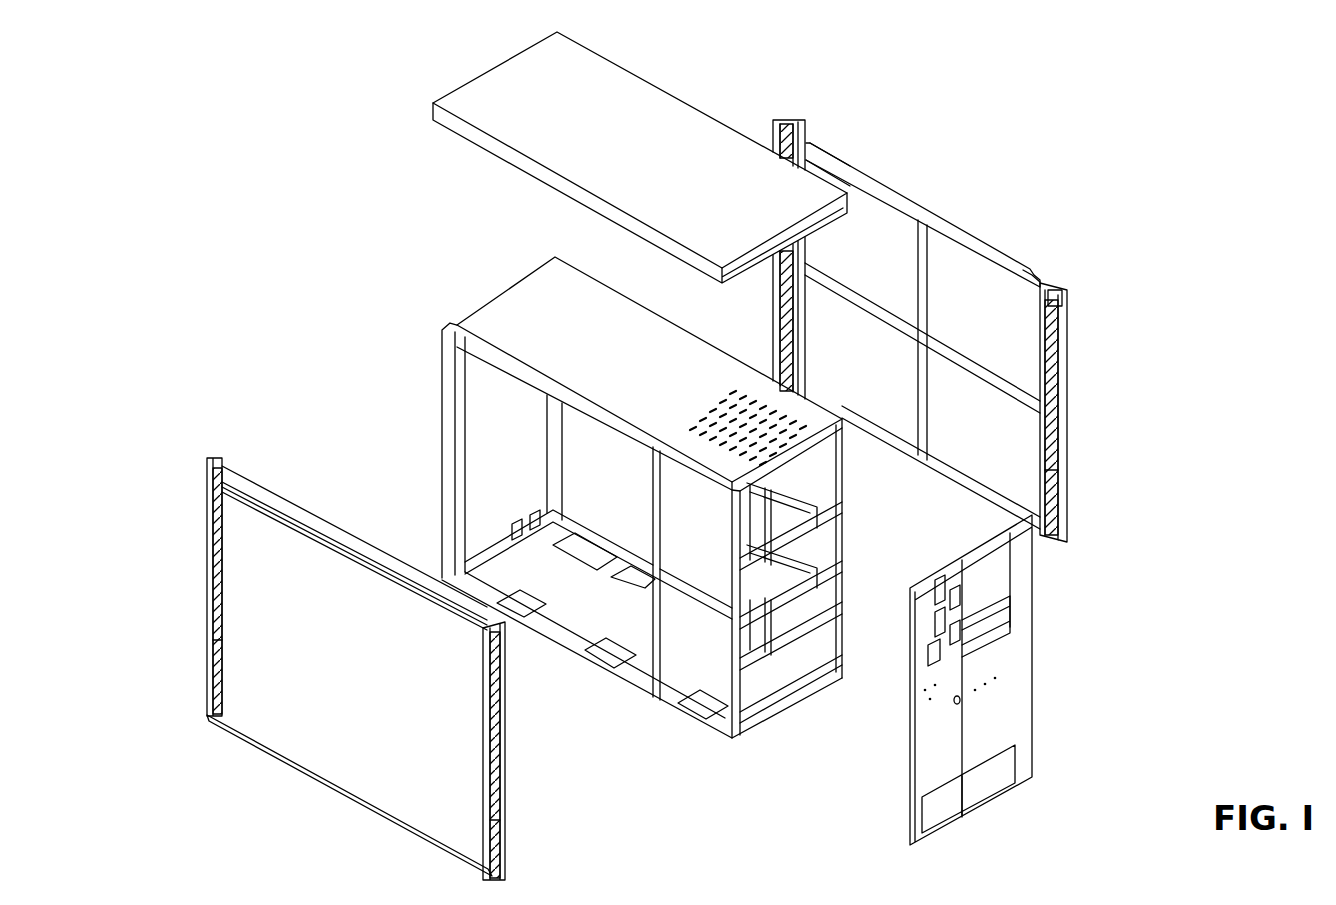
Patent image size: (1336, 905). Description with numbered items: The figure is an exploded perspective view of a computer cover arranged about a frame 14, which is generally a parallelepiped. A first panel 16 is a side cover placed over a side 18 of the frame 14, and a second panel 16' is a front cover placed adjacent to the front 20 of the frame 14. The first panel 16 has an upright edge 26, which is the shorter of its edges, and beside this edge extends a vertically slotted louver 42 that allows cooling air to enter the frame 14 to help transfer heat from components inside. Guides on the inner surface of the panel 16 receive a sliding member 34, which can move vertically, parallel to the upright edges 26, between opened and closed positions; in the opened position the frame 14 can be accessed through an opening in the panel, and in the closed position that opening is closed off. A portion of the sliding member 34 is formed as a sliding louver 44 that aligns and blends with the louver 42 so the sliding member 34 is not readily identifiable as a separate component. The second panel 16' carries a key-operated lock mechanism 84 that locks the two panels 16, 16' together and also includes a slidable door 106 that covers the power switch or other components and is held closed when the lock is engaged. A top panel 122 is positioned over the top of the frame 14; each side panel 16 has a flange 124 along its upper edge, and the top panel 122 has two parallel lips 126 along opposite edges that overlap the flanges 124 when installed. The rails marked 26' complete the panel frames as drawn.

The frame 14 is at (758, 740).
The panel 16 is at (632, 496).
The second panel 16' is at (1002, 680).
The side 18 is at (676, 532).
The front 20 is at (832, 610).
The edge 26 is at (632, 581).
The horizontal rail 26' is at (655, 549).
The sliding member 34 is at (797, 147).
The louver 42 is at (1052, 498).
The sliding louver 44 is at (1056, 350).
The lock mechanism 84 is at (975, 708).
The door 106 is at (990, 627).
The top panel 122 is at (765, 195).
The flange 124 is at (975, 242).
The lip 126 is at (516, 165).